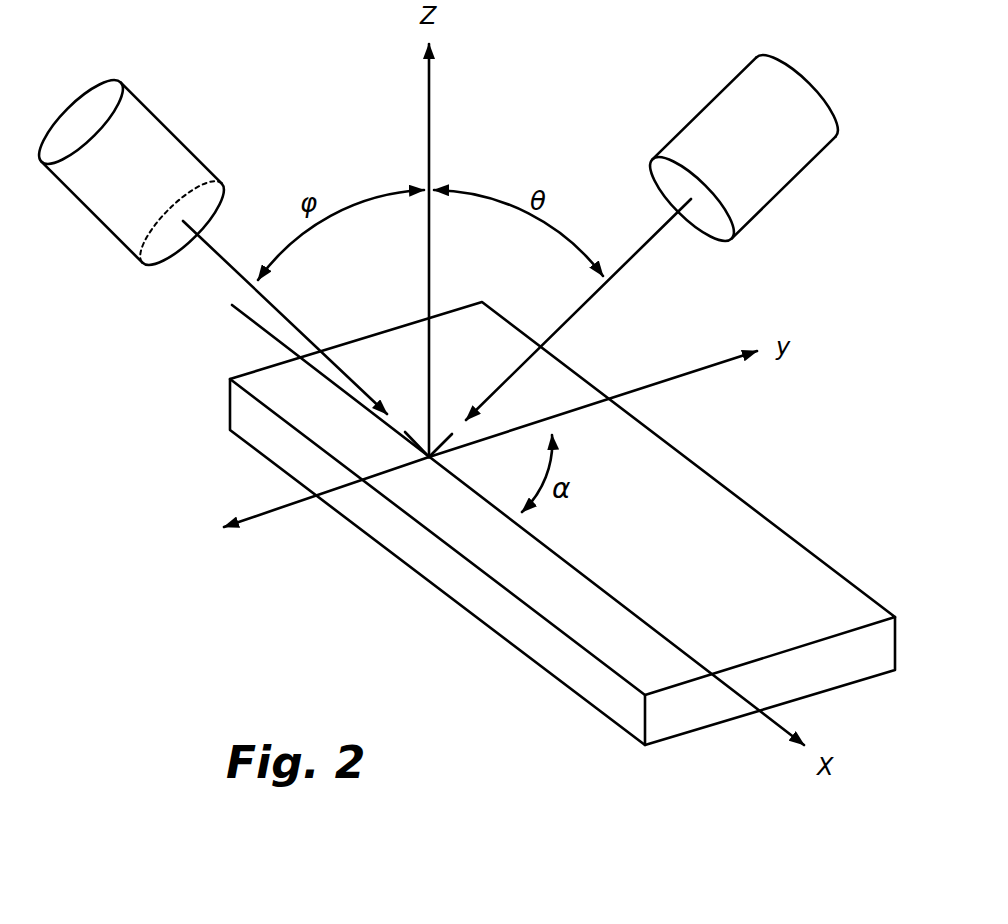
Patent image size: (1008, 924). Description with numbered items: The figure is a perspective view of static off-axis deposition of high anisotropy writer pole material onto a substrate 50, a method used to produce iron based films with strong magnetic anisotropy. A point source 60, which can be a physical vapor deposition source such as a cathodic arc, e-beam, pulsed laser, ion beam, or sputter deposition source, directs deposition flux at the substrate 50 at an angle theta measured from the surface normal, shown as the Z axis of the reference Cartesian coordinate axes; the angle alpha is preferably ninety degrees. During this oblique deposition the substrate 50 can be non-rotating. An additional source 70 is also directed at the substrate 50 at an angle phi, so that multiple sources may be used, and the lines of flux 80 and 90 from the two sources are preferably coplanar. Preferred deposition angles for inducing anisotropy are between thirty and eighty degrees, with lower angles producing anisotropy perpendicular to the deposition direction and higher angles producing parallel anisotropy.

The substrate 50 is at (503, 587).
The point source 60 is at (730, 131).
The additional source 70 is at (164, 143).
The line of flux 80 is at (577, 316).
The line of flux 90 is at (284, 312).